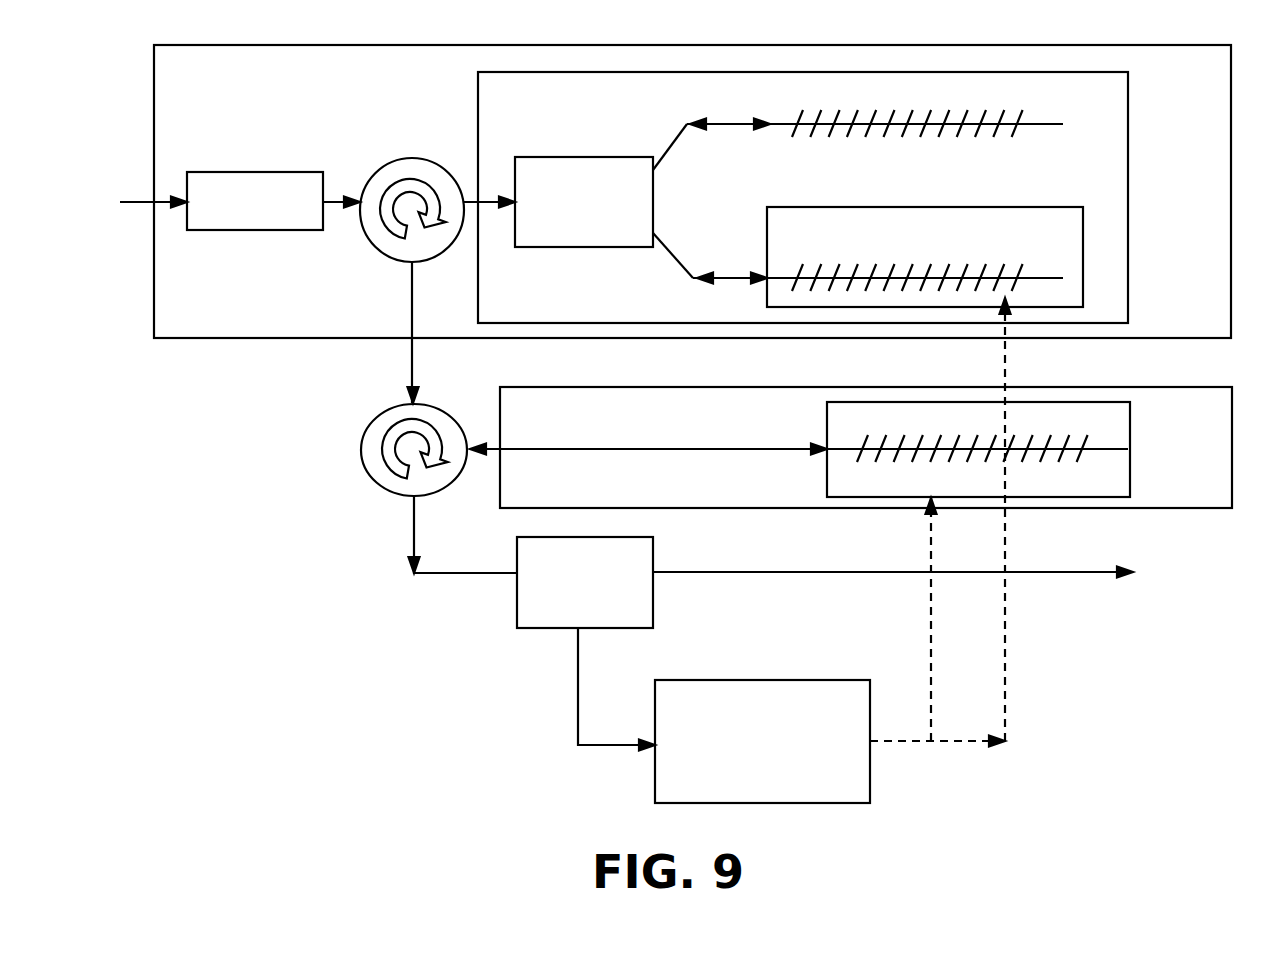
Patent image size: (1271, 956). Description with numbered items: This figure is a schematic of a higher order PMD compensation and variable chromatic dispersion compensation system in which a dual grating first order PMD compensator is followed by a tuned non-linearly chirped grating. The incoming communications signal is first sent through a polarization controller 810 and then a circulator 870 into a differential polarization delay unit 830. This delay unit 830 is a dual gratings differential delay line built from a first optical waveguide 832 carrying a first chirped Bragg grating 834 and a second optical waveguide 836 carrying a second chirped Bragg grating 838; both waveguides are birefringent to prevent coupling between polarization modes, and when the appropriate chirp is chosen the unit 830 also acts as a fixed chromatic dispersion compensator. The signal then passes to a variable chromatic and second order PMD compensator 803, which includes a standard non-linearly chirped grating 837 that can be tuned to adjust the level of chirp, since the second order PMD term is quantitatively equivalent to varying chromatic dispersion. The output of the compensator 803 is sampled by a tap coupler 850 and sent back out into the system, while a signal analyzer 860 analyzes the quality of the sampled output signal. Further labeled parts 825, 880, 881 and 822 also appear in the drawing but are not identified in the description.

The polarization controller 810 is at (229, 217).
The circulator 870 is at (412, 157).
The differential polarization delay unit 830 is at (523, 118).
The coupler 825 is at (558, 218).
The first optical waveguide 832 is at (1058, 121).
The first chirped Bragg grating 834 is at (874, 121).
The reference unit 880 is at (779, 246).
The second optical waveguide 836 is at (1058, 275).
The second chirped Bragg grating 838 is at (926, 271).
The variable chromatic/second order PMD compensator 803 is at (1157, 464).
The tunable filter 881 is at (1067, 491).
The non-linearly chirped grating 837 is at (985, 441).
The output signal path 822 is at (416, 536).
The tap coupler 850 is at (558, 597).
The signal analyzer 860 is at (736, 759).